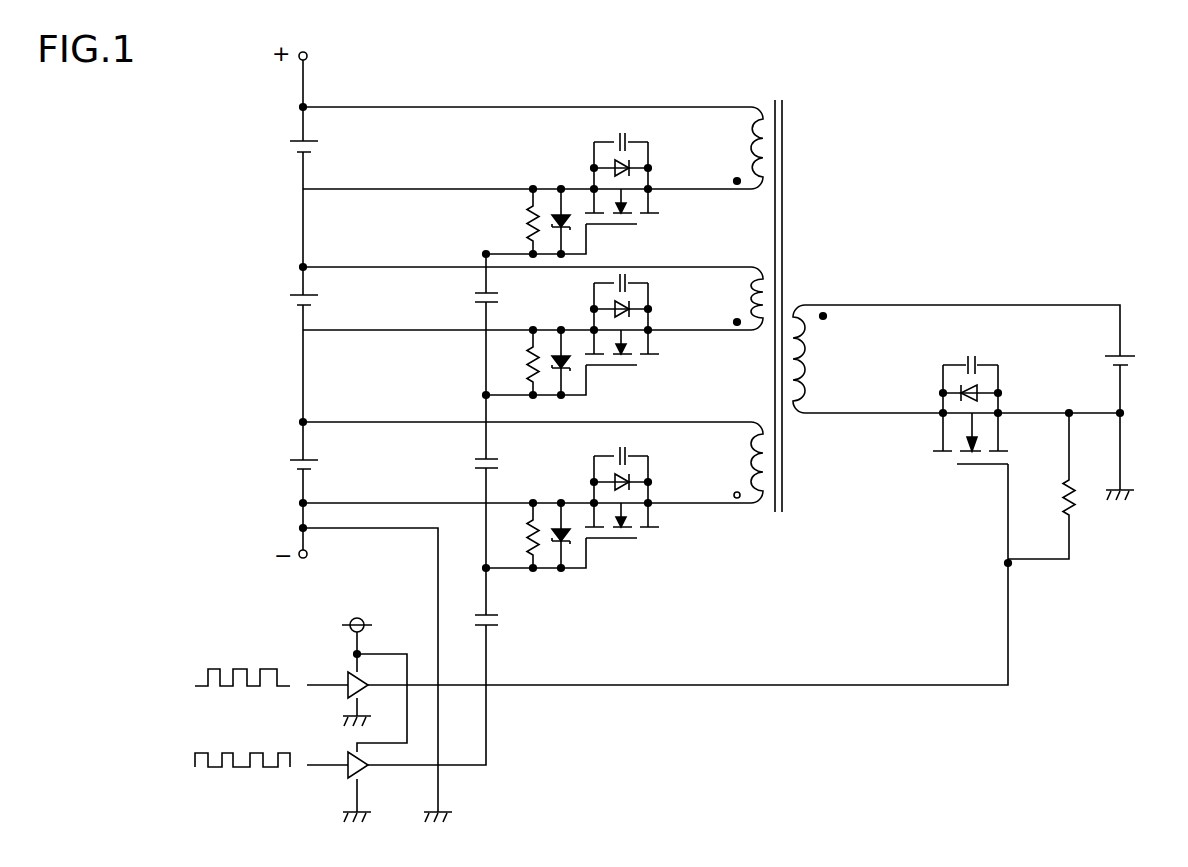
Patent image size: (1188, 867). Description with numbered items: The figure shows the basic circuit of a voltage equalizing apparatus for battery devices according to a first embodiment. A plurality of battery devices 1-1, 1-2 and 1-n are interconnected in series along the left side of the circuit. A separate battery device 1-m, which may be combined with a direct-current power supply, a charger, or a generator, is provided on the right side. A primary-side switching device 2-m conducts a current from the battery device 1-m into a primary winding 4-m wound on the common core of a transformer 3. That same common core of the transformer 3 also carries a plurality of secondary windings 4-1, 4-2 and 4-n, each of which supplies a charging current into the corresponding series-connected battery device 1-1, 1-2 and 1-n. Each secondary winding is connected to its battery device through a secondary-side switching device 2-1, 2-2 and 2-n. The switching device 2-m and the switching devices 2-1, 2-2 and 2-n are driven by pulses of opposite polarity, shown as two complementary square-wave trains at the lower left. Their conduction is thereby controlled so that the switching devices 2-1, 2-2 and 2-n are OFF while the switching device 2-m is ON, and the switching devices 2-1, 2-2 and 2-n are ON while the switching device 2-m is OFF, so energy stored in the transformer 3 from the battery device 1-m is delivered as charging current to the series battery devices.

The battery device 1-1 is at (281, 148).
The battery device 1-2 is at (281, 297).
The battery device 1-n is at (281, 465).
The battery device 1-m is at (1144, 358).
The switching device 2-1 is at (635, 198).
The switching device 2-2 is at (635, 339).
The switching device 2-n is at (635, 512).
The switching device 2-m is at (975, 438).
The transformer 3 is at (791, 296).
The secondary winding 4-1 is at (731, 134).
The secondary winding 4-2 is at (731, 285).
The secondary winding 4-n is at (731, 449).
The primary winding 4-m is at (823, 346).